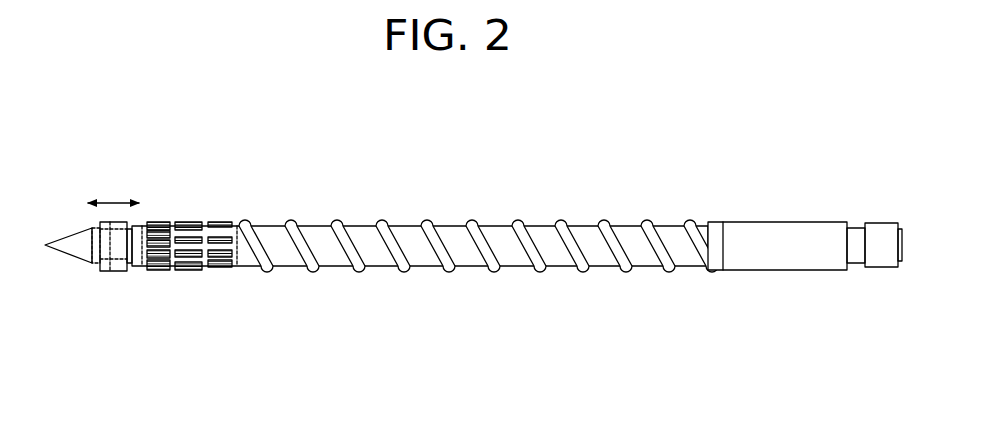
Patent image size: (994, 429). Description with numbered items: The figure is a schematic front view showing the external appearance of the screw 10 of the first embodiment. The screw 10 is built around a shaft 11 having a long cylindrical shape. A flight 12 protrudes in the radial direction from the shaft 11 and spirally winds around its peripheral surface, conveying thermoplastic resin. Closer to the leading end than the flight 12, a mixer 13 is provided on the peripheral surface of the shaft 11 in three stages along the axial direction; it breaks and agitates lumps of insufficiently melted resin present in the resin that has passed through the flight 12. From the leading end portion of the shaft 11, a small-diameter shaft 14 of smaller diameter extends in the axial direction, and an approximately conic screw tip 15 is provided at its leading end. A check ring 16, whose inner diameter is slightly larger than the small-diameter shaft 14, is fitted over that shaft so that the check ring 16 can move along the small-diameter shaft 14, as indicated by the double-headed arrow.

The screw 10 is at (469, 255).
The shaft 11 is at (355, 226).
The flight 12 is at (518, 222).
The mixer 13 is at (222, 221).
The small-diameter shaft 14 is at (112, 271).
The screw tip 15 is at (63, 256).
The check ring 16 is at (101, 222).